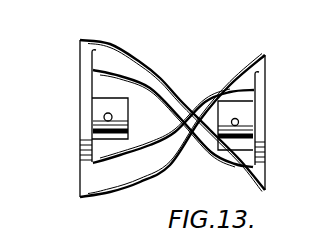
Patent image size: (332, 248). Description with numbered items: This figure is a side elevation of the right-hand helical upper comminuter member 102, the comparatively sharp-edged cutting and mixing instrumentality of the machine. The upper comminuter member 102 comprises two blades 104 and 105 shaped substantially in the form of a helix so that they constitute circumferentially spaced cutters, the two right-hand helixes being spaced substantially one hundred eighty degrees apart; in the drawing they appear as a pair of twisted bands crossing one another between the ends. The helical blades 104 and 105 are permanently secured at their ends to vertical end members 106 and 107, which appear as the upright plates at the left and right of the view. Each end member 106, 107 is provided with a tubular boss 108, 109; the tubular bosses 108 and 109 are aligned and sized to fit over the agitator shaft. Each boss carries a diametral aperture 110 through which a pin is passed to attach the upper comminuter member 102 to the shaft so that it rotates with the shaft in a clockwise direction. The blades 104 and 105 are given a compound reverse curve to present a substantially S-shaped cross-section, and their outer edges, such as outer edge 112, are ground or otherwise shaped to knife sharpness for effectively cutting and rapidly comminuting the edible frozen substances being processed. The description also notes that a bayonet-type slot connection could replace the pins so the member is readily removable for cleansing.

The upper comminuter member 102 is at (171, 82).
The blade 104 is at (143, 64).
The blade 105 is at (121, 175).
The vertical end member 106 is at (88, 97).
The vertical end member 107 is at (258, 91).
The tubular boss 108 is at (96, 132).
The tubular boss 109 is at (256, 131).
The diametral aperture 110 is at (103, 115).
The outer edge 112 is at (154, 163).